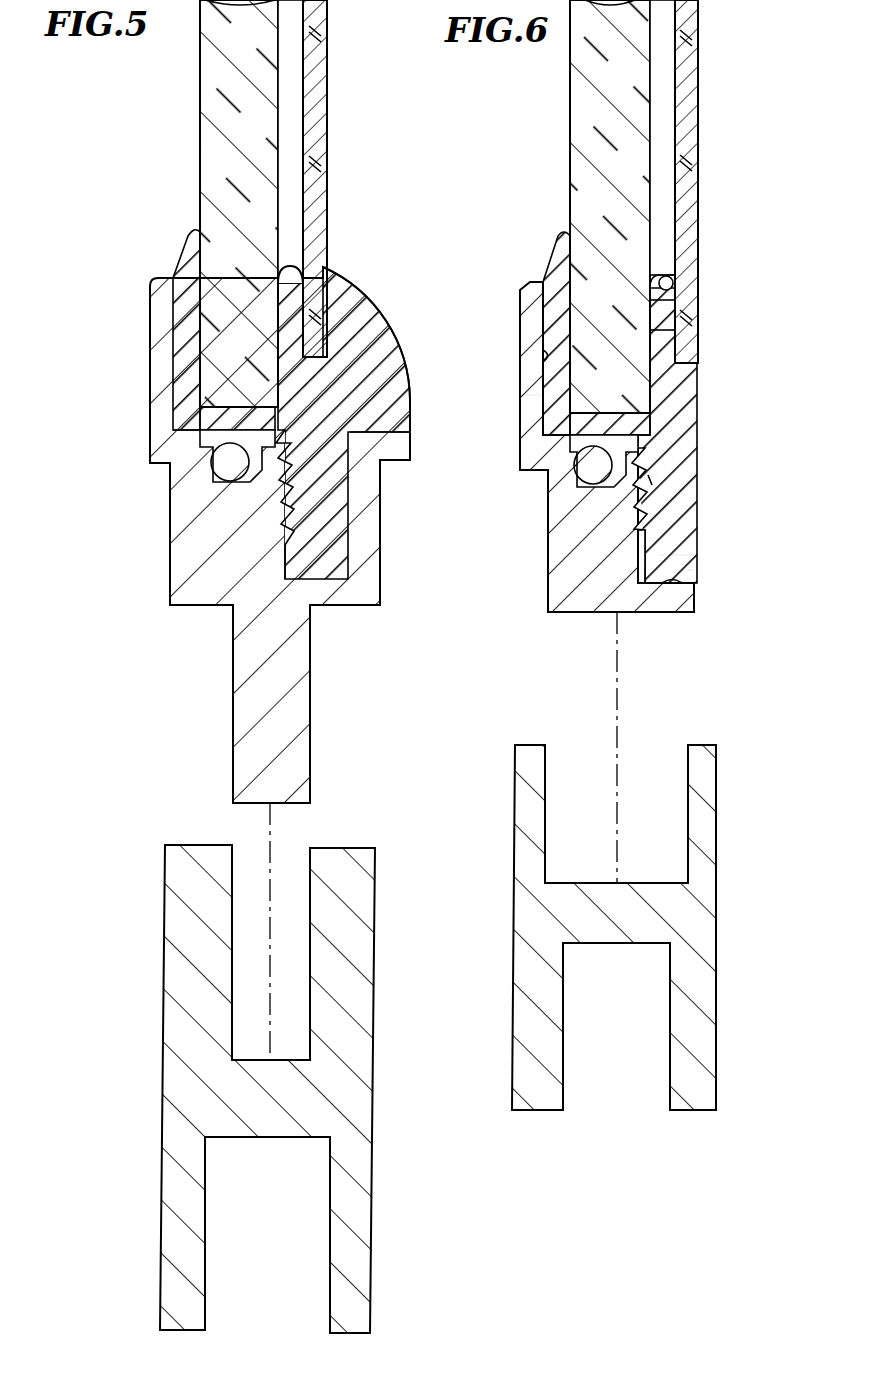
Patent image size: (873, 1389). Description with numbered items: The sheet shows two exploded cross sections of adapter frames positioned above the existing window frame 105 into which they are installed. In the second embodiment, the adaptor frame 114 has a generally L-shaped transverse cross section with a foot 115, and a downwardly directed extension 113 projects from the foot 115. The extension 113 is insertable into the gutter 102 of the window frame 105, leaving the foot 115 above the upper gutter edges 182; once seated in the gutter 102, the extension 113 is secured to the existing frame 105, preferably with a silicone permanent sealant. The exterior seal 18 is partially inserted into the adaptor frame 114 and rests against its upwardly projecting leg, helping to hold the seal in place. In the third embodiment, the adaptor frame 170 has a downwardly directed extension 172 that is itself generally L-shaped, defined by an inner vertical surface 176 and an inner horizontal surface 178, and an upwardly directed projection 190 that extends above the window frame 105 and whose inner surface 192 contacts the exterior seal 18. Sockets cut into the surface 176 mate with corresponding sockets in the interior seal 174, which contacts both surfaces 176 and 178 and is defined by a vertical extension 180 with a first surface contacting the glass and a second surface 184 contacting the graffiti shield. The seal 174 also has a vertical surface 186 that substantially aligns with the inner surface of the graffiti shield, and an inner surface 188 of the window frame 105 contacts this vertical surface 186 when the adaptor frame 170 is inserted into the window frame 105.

In FIG. 6, the exterior seal 18 is at (555, 290).
In FIG. 5, the gutter 102 is at (315, 820).
In FIG. 5, the window frame 105 is at (408, 1238).
In FIG. 6, the window frame 105 is at (728, 1010).
In FIG. 5, the downwardly directed extension 113 is at (250, 712).
In FIG. 5, the adaptor frame 114 is at (385, 577).
In FIG. 5, the foot 115 is at (190, 553).
In FIG. 6, the adaptor frame 170 is at (523, 630).
In FIG. 6, the downwardly directed extension 172 is at (595, 553).
In FIG. 6, the interior seal 174 is at (660, 525).
In FIG. 6, the inner vertical surface 176 is at (670, 556).
In FIG. 6, the inner horizontal surface 178 is at (675, 585).
In FIG. 6, the vertical extension 180 is at (660, 337).
In FIG. 5, the upper gutter edges 182 is at (205, 845).
In FIG. 6, the upper gutter edges 182 is at (660, 312).
In FIG. 6, the second surface 184 is at (672, 270).
In FIG. 6, the vertical surface 186 is at (690, 571).
In FIG. 6, the inner surface 188 is at (690, 770).
In FIG. 6, the upwardly directed projection 190 is at (530, 405).
In FIG. 6, the inner surface 192 is at (545, 355).